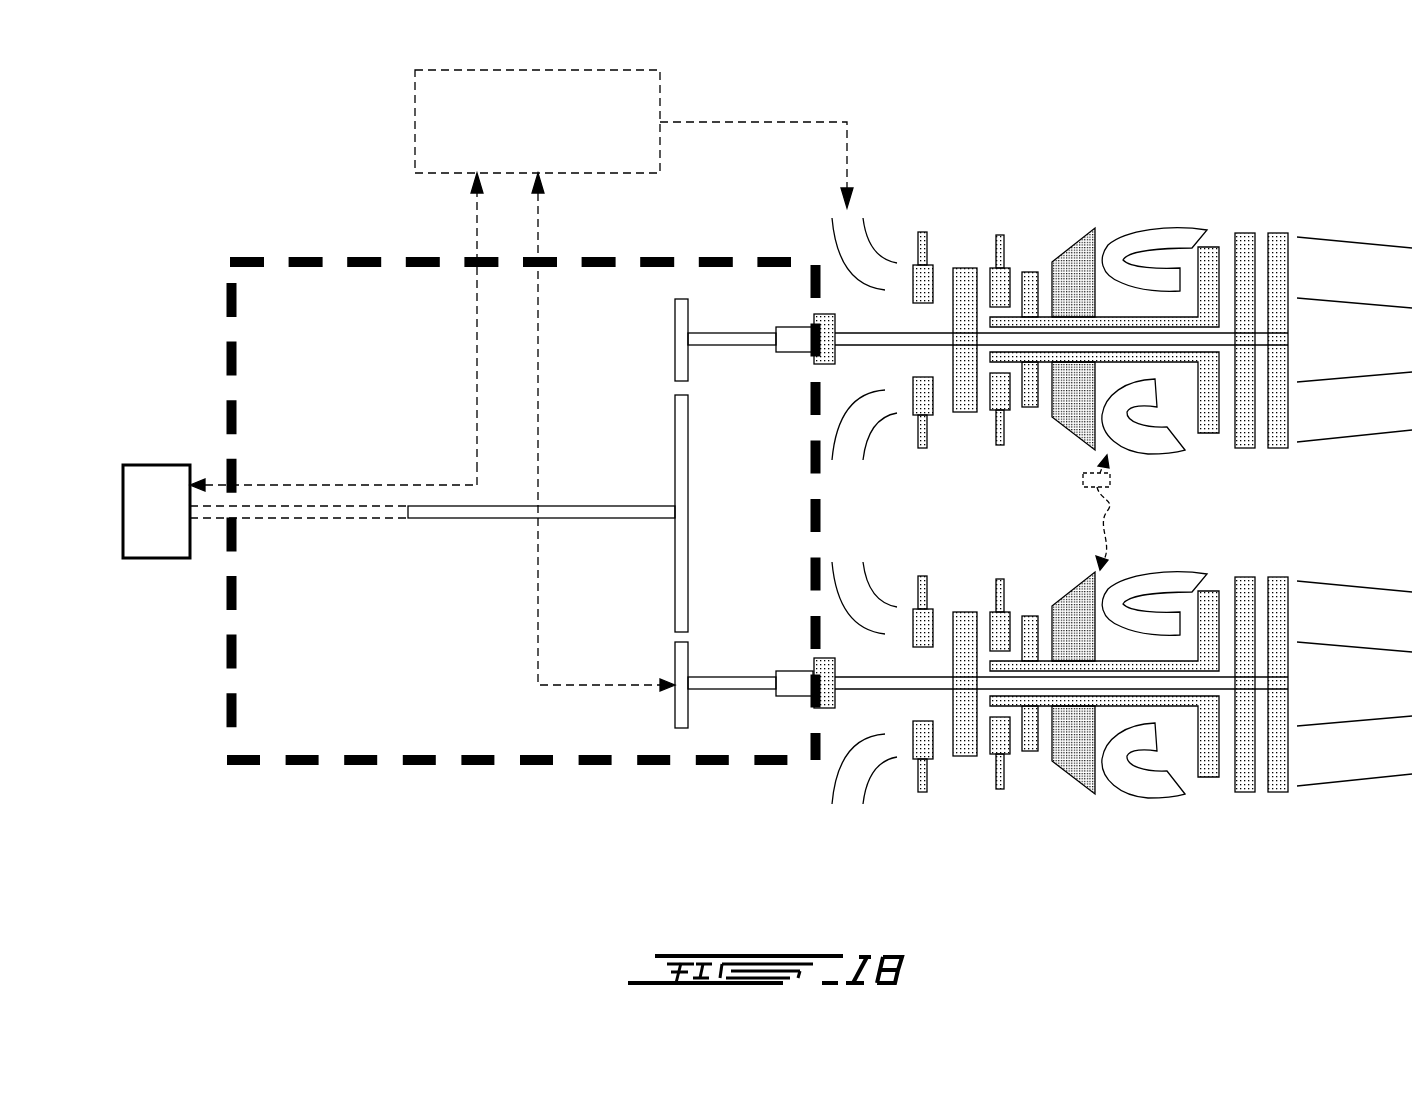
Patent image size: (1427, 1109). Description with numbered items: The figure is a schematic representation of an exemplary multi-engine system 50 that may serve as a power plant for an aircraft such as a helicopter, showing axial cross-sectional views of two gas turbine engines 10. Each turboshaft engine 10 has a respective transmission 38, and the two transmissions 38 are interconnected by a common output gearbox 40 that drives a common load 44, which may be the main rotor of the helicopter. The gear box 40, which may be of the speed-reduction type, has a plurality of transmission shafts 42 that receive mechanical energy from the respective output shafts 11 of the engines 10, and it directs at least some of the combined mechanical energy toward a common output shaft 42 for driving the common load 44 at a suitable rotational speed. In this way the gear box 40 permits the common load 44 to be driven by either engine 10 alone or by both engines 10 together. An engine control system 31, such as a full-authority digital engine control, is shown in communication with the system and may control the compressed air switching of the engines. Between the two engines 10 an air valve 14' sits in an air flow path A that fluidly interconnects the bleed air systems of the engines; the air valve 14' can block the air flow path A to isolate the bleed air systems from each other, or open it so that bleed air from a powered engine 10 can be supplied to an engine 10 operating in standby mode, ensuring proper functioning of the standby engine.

The gas turbine engine 10 is at (1142, 192).
The output shaft 11 is at (865, 333).
The air valve 14' is at (1056, 481).
The engine control system 31 is at (553, 133).
The transmission 38 is at (877, 815).
The output gearbox 40 is at (413, 765).
The transmission shaft 42 is at (735, 333).
The common load 44 is at (160, 465).
The multi-engine system 50 is at (308, 177).
The air flow path A is at (1108, 510).